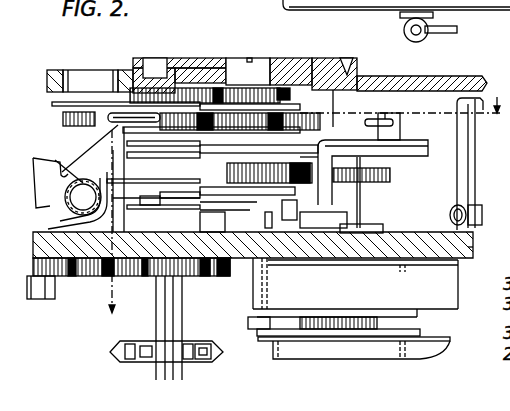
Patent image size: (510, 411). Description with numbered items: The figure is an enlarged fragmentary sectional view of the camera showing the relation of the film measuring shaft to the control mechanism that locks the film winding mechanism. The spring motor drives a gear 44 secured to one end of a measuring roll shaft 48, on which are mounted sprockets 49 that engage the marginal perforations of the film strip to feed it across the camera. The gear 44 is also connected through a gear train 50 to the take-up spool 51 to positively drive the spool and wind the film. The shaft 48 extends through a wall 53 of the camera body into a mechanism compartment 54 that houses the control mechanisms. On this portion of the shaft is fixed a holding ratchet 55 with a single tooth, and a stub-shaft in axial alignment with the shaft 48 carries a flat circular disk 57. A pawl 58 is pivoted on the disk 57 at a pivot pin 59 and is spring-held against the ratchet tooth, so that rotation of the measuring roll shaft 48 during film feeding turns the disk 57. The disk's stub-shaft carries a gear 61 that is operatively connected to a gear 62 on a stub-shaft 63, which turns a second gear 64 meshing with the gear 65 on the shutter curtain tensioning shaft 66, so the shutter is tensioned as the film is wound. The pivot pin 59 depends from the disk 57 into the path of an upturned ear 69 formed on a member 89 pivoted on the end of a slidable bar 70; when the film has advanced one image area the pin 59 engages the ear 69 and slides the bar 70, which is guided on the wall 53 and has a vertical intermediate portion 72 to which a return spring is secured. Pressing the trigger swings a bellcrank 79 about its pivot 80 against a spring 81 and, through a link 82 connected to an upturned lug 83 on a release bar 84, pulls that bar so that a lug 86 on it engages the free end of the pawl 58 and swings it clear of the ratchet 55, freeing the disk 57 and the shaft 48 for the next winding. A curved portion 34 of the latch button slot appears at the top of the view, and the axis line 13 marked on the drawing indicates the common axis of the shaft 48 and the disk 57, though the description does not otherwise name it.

The center line / axis 13 is at (303, 208).
The curved portion 34 is at (355, 21).
The gear 44 is at (193, 278).
The measuring roll shaft 48 is at (183, 323).
The sprockets 49 is at (117, 356).
The gear train 50 is at (58, 278).
The take-up spool 51 is at (40, 300).
The wall 53 is at (473, 245).
The mechanism compartment 54 is at (447, 77).
The holding ratchet 55 is at (119, 278).
The disk 57 is at (157, 181).
The pawl 58 is at (112, 179).
The pivot pin 59 is at (220, 205).
The gear 61 is at (62, 118).
The gear 62 is at (325, 140).
The stub-shaft 63 is at (287, 135).
The second gear 64 is at (300, 157).
The gear 65 is at (390, 178).
The shutter curtain tensioning shaft 66 is at (360, 192).
The upturned ear 69 is at (165, 192).
The slidable bar 70 is at (430, 233).
The vertical intermediate portion 72 is at (472, 153).
The bellcrank 79 is at (105, 118).
The pivot 80 is at (64, 217).
The spring 81 is at (76, 143).
The link 82 is at (136, 116).
The upturned lug 83 is at (394, 118).
The release bar 84 is at (414, 148).
The lug 86 is at (280, 199).
The member 89 is at (218, 283).